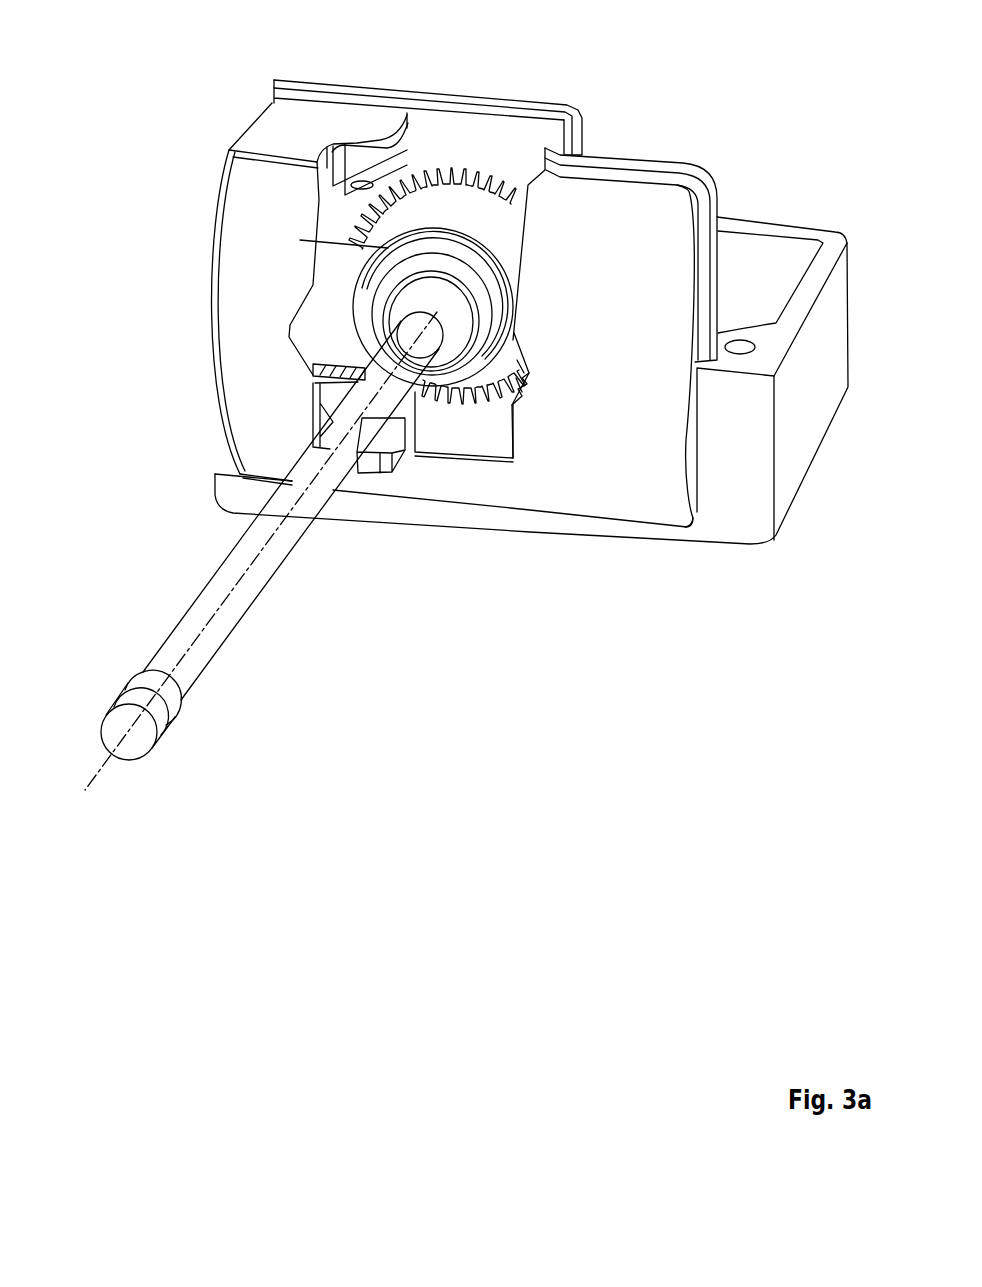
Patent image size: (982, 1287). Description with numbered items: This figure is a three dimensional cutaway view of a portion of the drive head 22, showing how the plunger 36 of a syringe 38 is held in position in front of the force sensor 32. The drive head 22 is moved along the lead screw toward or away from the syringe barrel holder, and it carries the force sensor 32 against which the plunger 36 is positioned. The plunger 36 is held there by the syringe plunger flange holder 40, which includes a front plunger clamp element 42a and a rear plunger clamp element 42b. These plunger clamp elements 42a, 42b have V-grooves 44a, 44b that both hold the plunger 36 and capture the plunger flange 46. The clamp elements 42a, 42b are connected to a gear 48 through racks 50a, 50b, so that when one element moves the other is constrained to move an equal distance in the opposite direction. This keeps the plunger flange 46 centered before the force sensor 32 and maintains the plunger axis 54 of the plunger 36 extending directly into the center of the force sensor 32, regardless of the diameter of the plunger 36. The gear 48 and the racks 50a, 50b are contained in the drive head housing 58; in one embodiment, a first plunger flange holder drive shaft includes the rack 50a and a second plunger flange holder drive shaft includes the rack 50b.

The drive head 22 is at (182, 343).
The force sensor 32 is at (458, 267).
The plunger 36 is at (223, 623).
The syringe 38 is at (255, 742).
The syringe plunger flange holder 40 is at (183, 133).
The front plunger clamp element 42a is at (607, 437).
The rear plunger clamp element 42b is at (285, 130).
The V-groove 44a is at (513, 407).
The V-groove 44b is at (293, 297).
The plunger flange 46 is at (433, 356).
The gear 48 is at (435, 203).
The rack 50a is at (463, 420).
The rack 50b is at (440, 152).
The plunger axis 54 is at (233, 585).
The drive head housing 58 is at (787, 430).